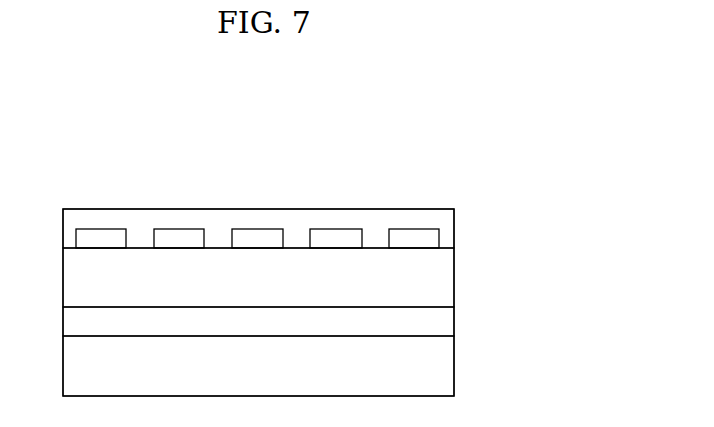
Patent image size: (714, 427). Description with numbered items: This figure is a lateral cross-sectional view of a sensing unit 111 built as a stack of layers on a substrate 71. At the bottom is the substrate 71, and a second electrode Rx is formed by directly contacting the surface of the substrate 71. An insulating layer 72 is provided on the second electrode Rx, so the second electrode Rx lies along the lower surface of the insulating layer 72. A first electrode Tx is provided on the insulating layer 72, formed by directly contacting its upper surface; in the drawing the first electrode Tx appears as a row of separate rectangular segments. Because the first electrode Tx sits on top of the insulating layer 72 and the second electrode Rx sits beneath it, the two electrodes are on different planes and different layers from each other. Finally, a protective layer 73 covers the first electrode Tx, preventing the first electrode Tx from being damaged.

The sensing unit 111 is at (490, 166).
The substrate 71 is at (455, 365).
The insulating layer 72 is at (455, 277).
The protective layer 73 is at (455, 228).
The second electrode Rx is at (455, 323).
The first electrode Tx is at (338, 238).